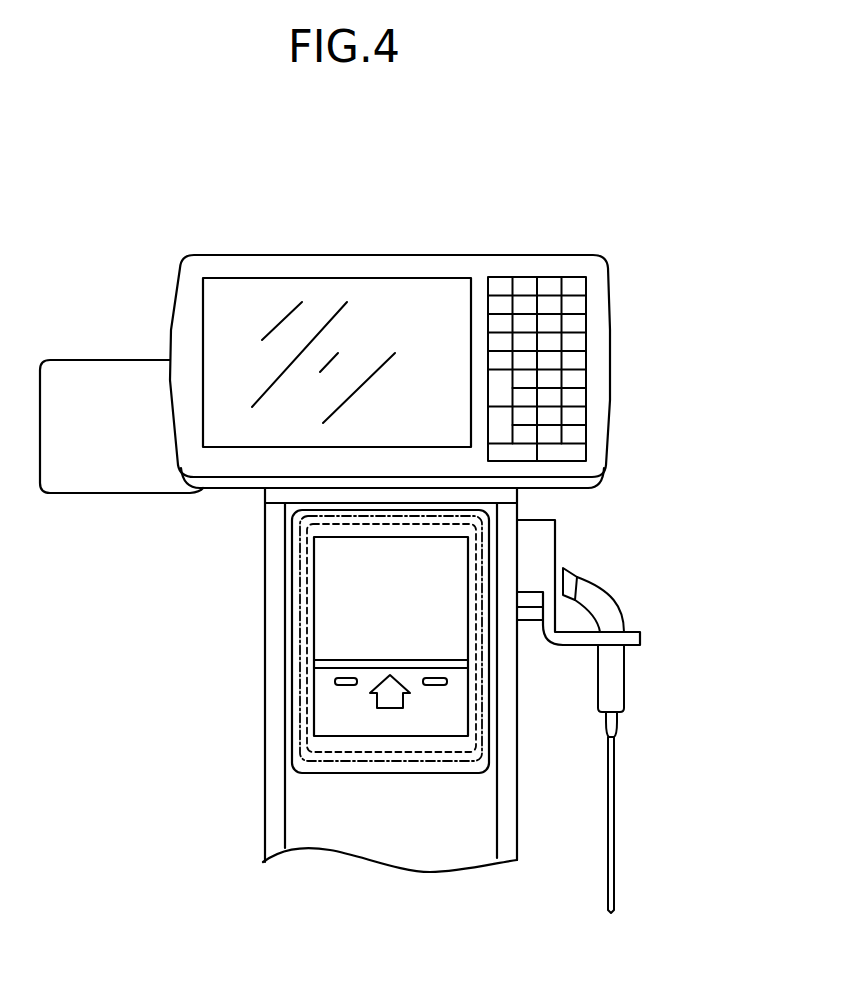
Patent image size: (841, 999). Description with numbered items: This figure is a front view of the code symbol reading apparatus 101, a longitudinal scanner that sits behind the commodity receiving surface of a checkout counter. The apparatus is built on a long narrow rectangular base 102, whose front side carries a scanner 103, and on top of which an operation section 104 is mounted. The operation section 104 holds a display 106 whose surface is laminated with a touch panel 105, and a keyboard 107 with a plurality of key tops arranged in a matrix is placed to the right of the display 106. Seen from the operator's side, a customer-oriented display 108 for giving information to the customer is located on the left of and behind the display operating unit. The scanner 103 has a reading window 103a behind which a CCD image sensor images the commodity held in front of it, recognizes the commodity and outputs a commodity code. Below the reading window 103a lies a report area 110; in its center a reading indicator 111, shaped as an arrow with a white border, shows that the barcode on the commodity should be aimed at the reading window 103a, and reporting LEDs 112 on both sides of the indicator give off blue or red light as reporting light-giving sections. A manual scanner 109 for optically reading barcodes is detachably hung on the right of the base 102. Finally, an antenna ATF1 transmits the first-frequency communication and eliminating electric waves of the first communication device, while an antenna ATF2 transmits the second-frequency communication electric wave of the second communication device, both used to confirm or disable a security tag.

The code symbol reading apparatus 101 is at (221, 212).
The base 102 is at (273, 557).
The scanner 103 is at (293, 764).
The reading window 103a is at (333, 603).
The operation section 104 is at (302, 253).
The touch panel 105 is at (375, 297).
The display 106 is at (430, 298).
The keyboard 107 is at (575, 307).
The customer-oriented display 108 is at (88, 360).
The manual scanner 109 is at (625, 672).
The report area 110 is at (437, 765).
The reading indicator 111 is at (392, 708).
The reporting LEDs 112 is at (435, 678).
The antenna ATF1 is at (347, 753).
The antenna ATF2 is at (440, 765).